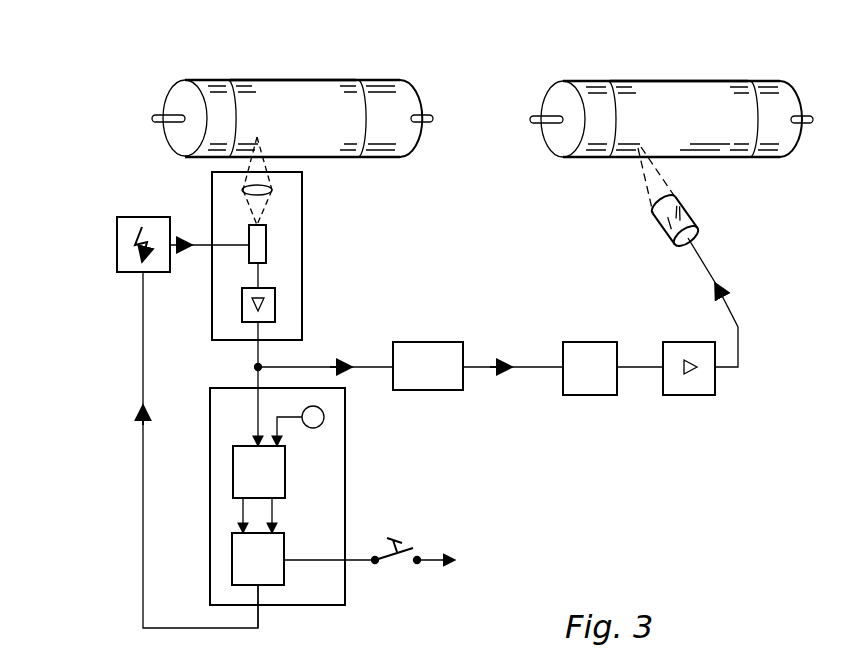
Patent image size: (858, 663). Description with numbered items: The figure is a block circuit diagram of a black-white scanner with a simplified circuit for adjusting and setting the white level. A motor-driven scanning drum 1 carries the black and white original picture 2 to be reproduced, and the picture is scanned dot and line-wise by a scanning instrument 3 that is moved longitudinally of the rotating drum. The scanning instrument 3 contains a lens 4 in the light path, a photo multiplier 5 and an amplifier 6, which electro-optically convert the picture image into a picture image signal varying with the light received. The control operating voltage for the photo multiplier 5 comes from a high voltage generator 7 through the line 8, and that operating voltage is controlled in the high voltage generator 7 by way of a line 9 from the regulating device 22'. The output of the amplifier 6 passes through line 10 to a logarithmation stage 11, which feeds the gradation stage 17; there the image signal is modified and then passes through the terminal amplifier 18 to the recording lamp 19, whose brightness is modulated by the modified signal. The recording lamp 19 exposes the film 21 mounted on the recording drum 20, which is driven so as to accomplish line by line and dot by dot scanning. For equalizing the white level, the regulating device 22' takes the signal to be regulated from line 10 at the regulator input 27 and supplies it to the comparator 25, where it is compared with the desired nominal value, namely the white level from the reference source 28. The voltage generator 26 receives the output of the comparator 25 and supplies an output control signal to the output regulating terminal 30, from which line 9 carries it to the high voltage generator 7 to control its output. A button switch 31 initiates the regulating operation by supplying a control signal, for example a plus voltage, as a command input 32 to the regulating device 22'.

The scanning drum 1 is at (382, 135).
The original picture 2 is at (324, 100).
The scanning instrument 3 is at (300, 250).
The lens 4 is at (266, 195).
The photo multiplier 5 is at (271, 244).
The amplifier 6 is at (267, 296).
The high voltage generator 7 is at (143, 226).
The line 8 is at (198, 248).
The line 9 is at (143, 358).
The line 10 is at (370, 367).
The logarithmation stage 11 is at (421, 348).
The gradation stage 17 is at (581, 348).
The terminal amplifier 18 is at (680, 354).
The recording lamp 19 is at (692, 216).
The recording drum 20 is at (765, 130).
The film 21 is at (668, 100).
The regulating device 22' is at (301, 496).
The comparator 25 is at (282, 472).
The voltage generator 26 is at (274, 548).
The regulator input 27 is at (255, 388).
The reference source 28 is at (318, 425).
The output regulating terminal 30 is at (261, 608).
The button switch 31 is at (398, 562).
The command input 32 is at (350, 562).